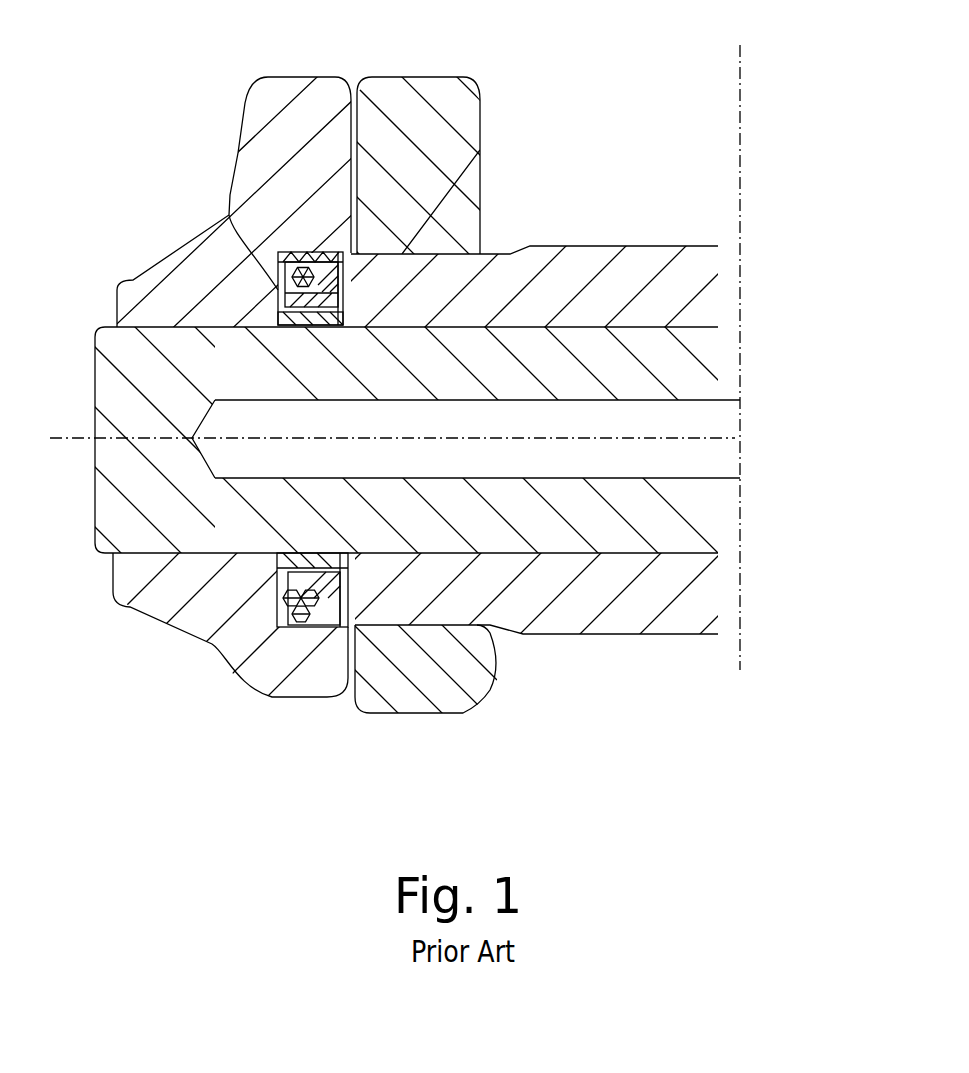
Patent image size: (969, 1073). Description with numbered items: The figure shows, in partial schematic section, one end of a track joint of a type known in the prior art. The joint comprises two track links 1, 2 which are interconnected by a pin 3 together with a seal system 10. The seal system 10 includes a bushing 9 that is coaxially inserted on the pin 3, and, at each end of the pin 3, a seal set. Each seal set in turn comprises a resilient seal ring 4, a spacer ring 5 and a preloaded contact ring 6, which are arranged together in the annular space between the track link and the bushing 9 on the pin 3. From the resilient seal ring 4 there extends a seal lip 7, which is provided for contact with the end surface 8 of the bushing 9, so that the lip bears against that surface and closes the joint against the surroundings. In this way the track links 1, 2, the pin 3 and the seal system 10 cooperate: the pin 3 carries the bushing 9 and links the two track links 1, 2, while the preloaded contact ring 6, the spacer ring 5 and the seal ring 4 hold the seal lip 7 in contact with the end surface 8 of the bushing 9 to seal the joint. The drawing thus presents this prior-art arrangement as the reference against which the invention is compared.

The track link 1 is at (435, 670).
The track link 2 is at (280, 666).
The pin 3 is at (180, 527).
The resilient seal ring 4 is at (300, 298).
The spacer ring 5 is at (306, 323).
The preloaded contact ring 6 is at (247, 240).
The seal lip 7 is at (340, 266).
The end surface 8 is at (353, 300).
The bushing 9 is at (485, 306).
The seal system 10 is at (266, 273).